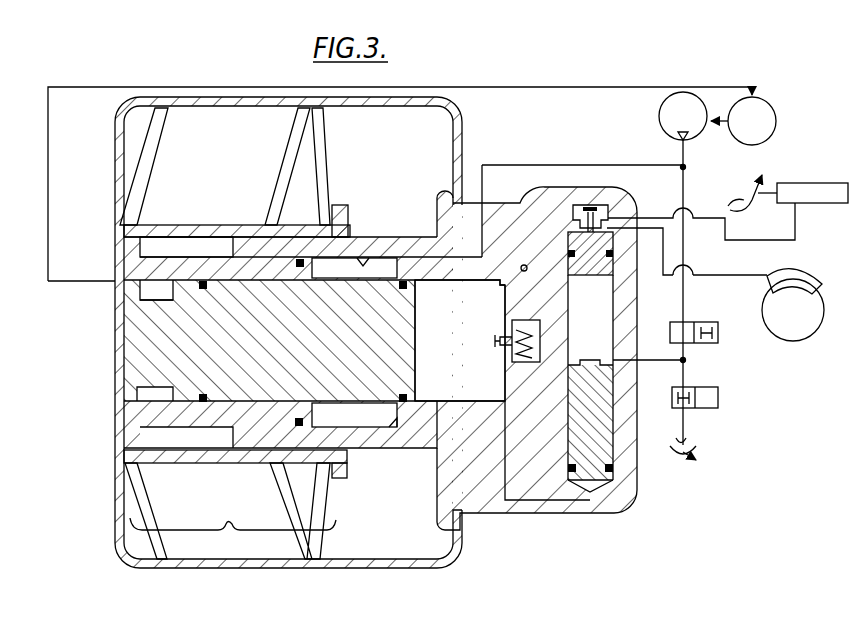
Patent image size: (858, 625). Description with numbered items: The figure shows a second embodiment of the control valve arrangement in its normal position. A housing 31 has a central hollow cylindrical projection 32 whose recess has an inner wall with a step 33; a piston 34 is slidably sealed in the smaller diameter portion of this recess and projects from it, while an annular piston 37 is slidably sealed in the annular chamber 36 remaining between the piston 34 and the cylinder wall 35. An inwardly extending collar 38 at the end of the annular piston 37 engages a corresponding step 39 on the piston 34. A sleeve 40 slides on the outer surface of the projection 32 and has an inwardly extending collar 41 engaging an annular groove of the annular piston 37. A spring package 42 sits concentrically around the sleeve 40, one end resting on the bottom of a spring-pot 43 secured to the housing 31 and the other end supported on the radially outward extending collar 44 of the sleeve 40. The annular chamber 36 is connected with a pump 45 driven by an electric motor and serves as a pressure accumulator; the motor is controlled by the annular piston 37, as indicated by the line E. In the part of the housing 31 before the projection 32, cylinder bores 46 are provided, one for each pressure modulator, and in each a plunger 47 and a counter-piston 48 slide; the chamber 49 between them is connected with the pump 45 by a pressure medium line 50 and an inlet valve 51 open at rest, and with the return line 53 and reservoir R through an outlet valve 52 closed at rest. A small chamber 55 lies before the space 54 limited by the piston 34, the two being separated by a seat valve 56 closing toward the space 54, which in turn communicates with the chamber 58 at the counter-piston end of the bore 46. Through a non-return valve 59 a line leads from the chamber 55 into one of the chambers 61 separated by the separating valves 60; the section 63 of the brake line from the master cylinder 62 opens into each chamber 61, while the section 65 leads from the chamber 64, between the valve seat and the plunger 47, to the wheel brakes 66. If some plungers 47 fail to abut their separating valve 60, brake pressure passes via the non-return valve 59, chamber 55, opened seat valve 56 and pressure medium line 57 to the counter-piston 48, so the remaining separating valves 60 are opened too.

The housing 31 is at (555, 492).
The central hollow cylindrical projection 32 is at (357, 430).
The step 33 is at (388, 413).
The piston 34 is at (157, 358).
The cylinder wall 35 is at (363, 265).
The annular chamber 36 is at (302, 224).
The annular piston 37 is at (170, 413).
The inwardly extending collar 38 is at (137, 393).
The step 39 is at (173, 395).
The sleeve 40 is at (213, 453).
The inwardly extending collar 41 is at (135, 239).
The spring package 42 is at (233, 539).
The spring-pot 43 is at (122, 545).
The radially outward extending collar 44 is at (338, 210).
The pump 45 is at (686, 105).
The cylinder bores 46 is at (616, 454).
The plunger 47 is at (603, 232).
The counter-piston 48 is at (598, 428).
The chamber 49 is at (587, 340).
The pressure medium line 50 is at (685, 299).
The inlet valve 51 is at (715, 335).
The outlet valve 52 is at (718, 401).
The return line 53 is at (702, 466).
The space 54 is at (440, 297).
The small chamber 55 is at (532, 323).
The seat valve 56 is at (496, 342).
The pressure medium line 57 is at (510, 485).
The chamber 58 is at (592, 488).
The non-return valve 59 is at (530, 258).
The separating valve 60 is at (586, 207).
The chamber 61 is at (593, 212).
The master cylinder 62 is at (792, 195).
The section of the brake line 63 is at (656, 218).
The chamber 64 is at (607, 229).
The section of the brake line 65 is at (730, 275).
The wheel brakes 66 is at (806, 279).
The line E is at (48, 208).
The reservoir R is at (683, 463).